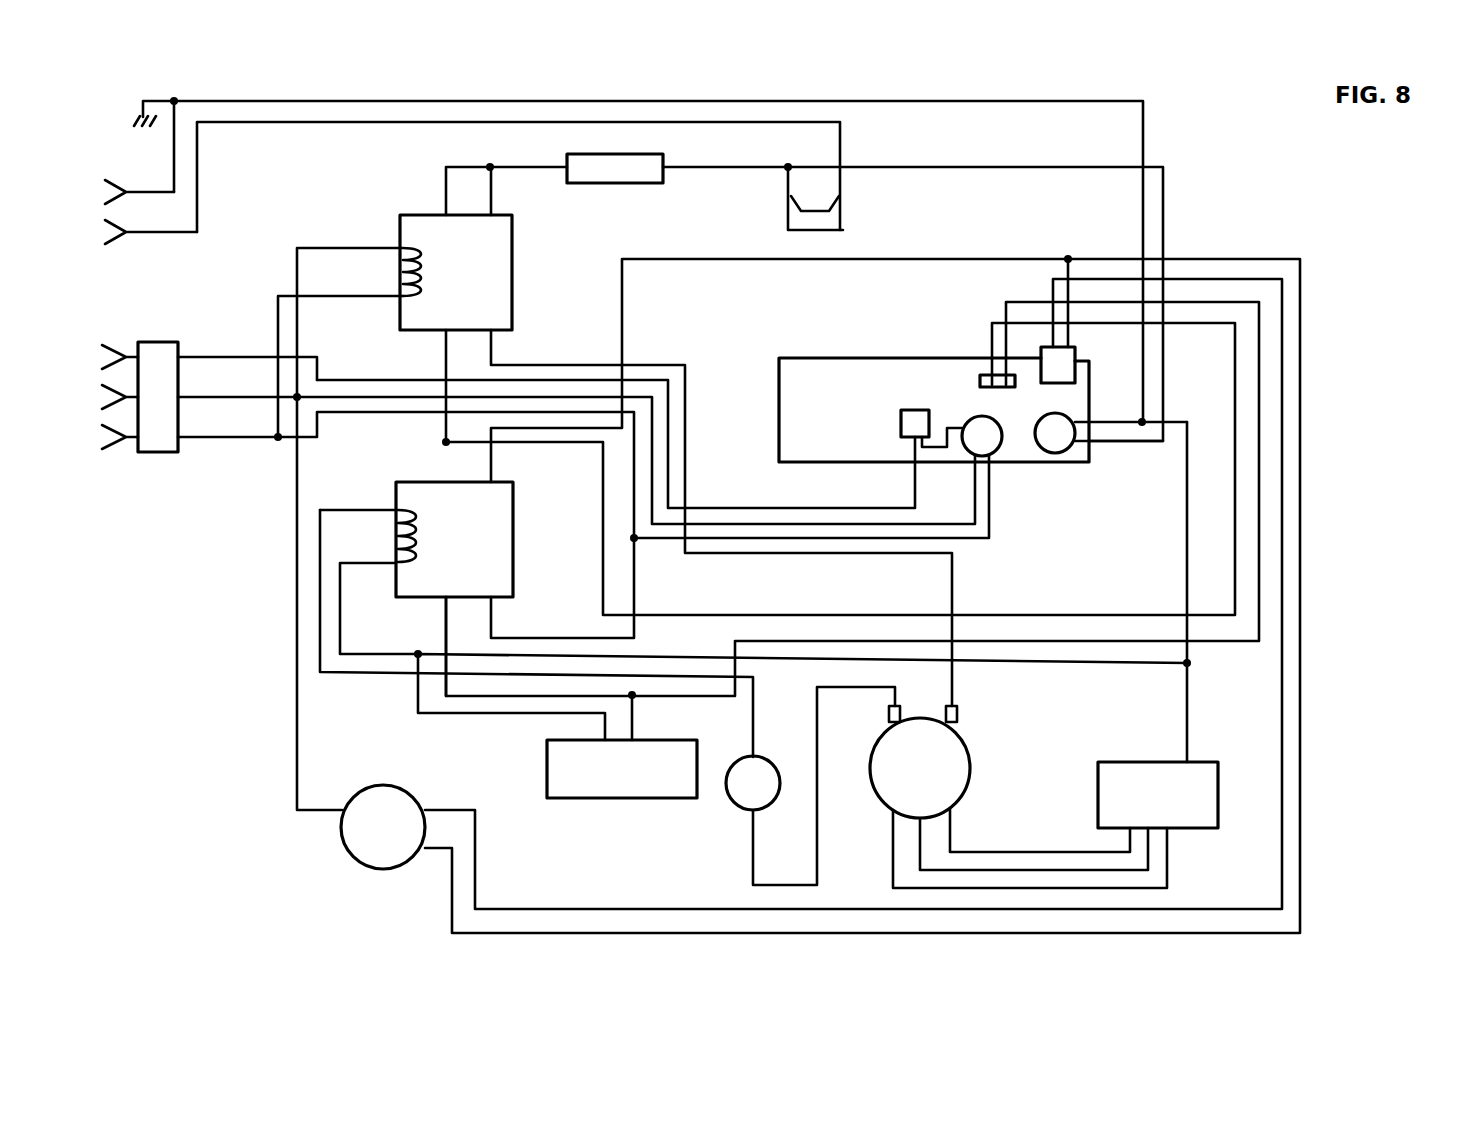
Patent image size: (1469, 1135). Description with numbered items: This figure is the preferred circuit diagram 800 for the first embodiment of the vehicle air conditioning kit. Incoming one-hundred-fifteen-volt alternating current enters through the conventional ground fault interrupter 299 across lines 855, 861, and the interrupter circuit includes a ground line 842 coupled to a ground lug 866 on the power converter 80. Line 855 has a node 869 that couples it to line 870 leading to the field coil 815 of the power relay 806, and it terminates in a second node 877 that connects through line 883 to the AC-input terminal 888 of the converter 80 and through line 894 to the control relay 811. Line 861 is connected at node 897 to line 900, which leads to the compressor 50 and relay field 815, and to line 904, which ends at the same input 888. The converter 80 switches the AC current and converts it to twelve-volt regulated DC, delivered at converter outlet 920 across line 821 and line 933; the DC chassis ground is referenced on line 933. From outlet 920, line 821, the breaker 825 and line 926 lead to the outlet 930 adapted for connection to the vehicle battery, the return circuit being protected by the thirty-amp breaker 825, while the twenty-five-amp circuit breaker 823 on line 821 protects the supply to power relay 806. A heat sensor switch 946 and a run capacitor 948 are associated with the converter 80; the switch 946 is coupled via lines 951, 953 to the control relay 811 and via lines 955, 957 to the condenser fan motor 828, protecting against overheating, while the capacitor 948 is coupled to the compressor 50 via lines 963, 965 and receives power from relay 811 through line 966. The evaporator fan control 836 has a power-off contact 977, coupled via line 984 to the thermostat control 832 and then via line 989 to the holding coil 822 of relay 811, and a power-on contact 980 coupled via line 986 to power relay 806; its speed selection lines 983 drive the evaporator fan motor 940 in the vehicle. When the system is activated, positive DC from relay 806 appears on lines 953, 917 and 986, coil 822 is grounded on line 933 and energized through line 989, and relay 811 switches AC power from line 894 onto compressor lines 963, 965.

The electrical wiring circuit 800 is at (648, 86).
The outlet 930 is at (127, 255).
The line 933 is at (985, 101).
The line 926 is at (198, 190).
The breaker 825 is at (787, 218).
The circuit breaker 823 is at (665, 158).
The line 821 is at (1010, 167).
The power relay 806 is at (416, 208).
The field coil 815 is at (396, 272).
The line 870 is at (325, 298).
The ground fault interrupter 299 is at (128, 470).
The ground line 842 is at (246, 356).
The node 897 is at (320, 379).
The line 861 is at (200, 397).
The line 855 is at (260, 440).
The node 869 is at (278, 440).
The second node 877 is at (638, 541).
The line 894 is at (603, 639).
The line 965 is at (623, 342).
The line 963 is at (1284, 412).
The run capacitor 948 is at (1048, 350).
The line 957 is at (633, 723).
The line 953 is at (447, 466).
The line 917 is at (603, 524).
The line 951 is at (1131, 615).
The line 986 is at (687, 468).
The control relay 811 is at (393, 476).
The field coil 822 is at (394, 538).
The line 989 is at (397, 674).
The line 900 is at (294, 641).
The line 955 is at (444, 633).
The power converter 80 is at (795, 352).
The line 966 is at (1076, 338).
The heat sensor switch 946 is at (988, 375).
The ground lug 866 is at (900, 418).
The AC-input terminal 888 is at (998, 444).
The converter outlet 920 is at (1069, 448).
The line 904 is at (973, 505).
The line 883 is at (991, 518).
The compressor 50 is at (342, 870).
The fan motor 828 is at (628, 800).
The thermostat control 832 is at (742, 810).
The line 984 is at (819, 846).
The power-off contact 977 is at (900, 712).
The power-on contact 980 is at (958, 713).
The fan control 836 is at (975, 740).
The speed selection lines 983 is at (1078, 888).
The evaporator fan motor 940 is at (1232, 775).